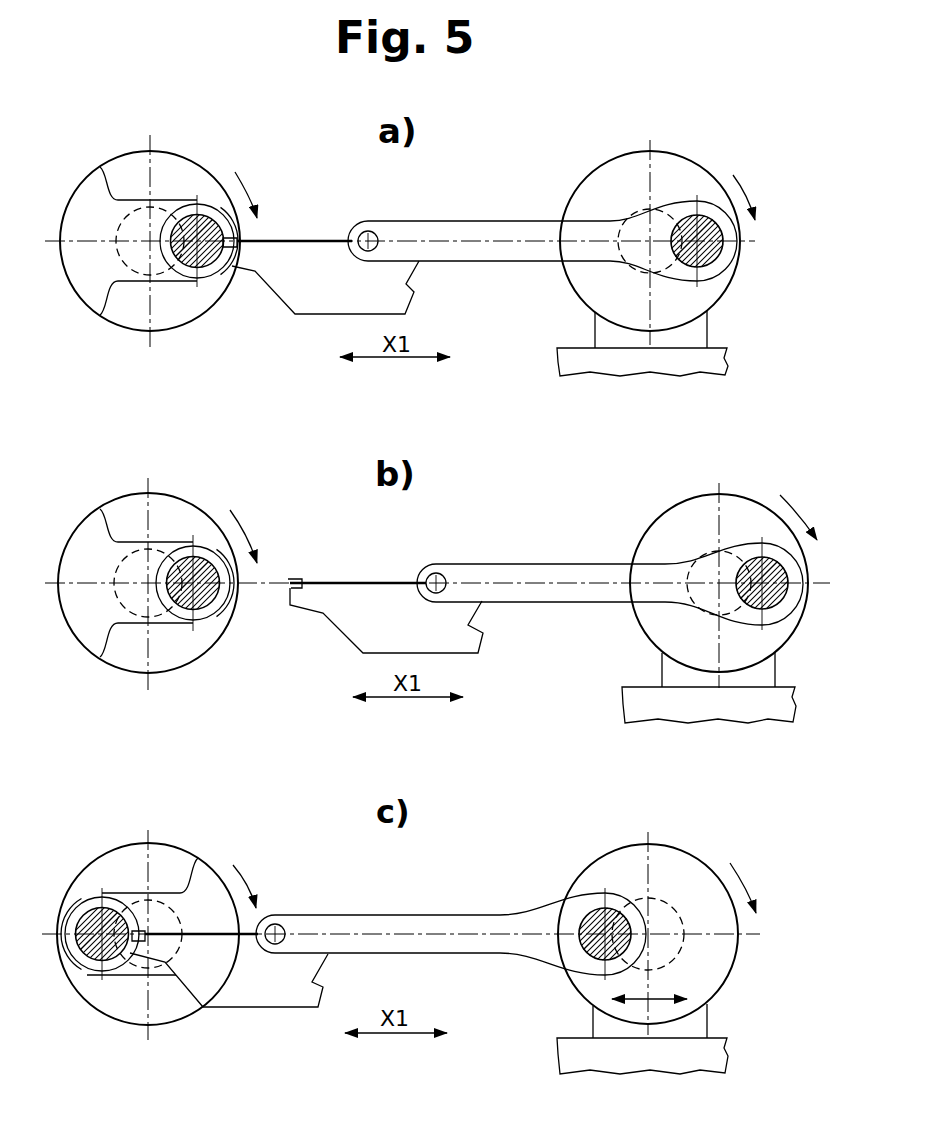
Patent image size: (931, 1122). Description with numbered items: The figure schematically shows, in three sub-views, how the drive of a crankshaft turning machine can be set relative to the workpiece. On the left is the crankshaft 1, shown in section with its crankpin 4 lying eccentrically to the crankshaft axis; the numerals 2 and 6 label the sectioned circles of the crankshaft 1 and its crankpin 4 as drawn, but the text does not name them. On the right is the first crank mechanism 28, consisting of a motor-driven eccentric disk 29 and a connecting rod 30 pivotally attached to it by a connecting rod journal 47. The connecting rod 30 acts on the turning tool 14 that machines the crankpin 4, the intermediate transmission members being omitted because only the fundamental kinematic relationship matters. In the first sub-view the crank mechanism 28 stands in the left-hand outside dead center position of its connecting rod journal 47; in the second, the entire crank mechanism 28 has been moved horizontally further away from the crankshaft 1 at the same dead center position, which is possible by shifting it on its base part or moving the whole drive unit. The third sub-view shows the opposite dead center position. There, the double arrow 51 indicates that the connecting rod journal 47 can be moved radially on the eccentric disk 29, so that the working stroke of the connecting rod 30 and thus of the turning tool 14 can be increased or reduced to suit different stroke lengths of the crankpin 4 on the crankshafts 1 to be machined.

The crankshaft 1 is at (121, 148).
The wheel axis / bore 2 is at (140, 263).
The crankpin 4 is at (208, 206).
The eccentric pin 6 is at (178, 261).
The turning tool 14 is at (328, 297).
The first crank mechanism 28 is at (573, 310).
The eccentric disk 29 is at (620, 180).
The connecting rod 30 is at (458, 232).
The connecting rod journal 47 is at (715, 255).
The double arrow 51 is at (653, 996).